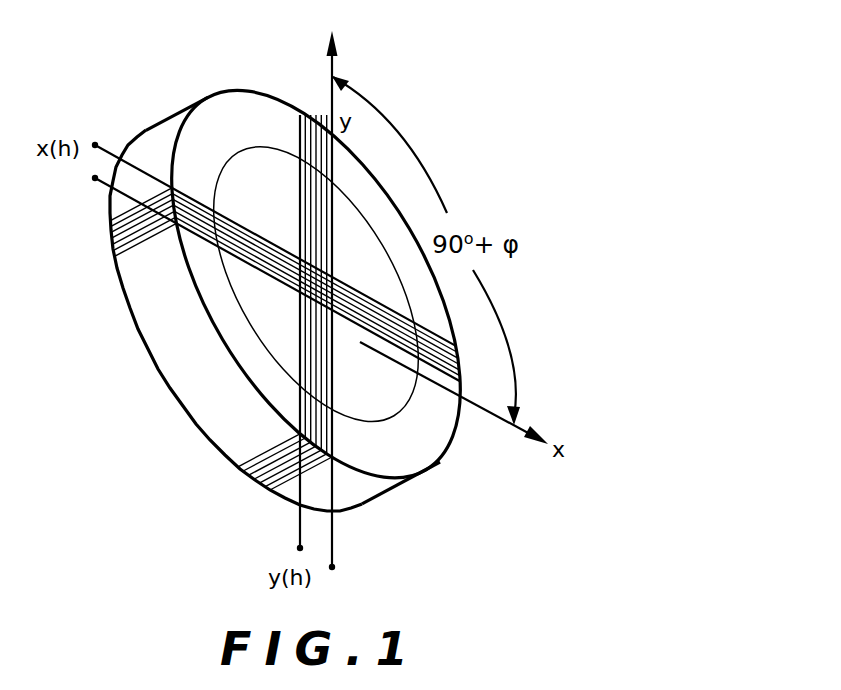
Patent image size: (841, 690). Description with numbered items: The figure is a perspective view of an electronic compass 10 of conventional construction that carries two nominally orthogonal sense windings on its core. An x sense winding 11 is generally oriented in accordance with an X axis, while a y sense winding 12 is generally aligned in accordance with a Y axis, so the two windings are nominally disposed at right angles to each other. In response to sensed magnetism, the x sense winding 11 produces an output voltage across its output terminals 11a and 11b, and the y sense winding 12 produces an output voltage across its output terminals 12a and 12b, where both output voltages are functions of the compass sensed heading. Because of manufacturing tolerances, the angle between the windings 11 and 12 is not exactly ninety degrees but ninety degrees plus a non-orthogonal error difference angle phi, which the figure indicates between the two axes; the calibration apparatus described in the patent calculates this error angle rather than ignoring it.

The electronic compass 10 is at (314, 263).
The x sense winding 11 is at (457, 358).
The output terminal of x sense winding 11a is at (95, 143).
The output terminal of x sense winding 11b is at (95, 180).
The y sense winding 12 is at (311, 115).
The output terminal of y sense winding 12a is at (298, 548).
The output terminal of y sense winding 12b is at (334, 566).